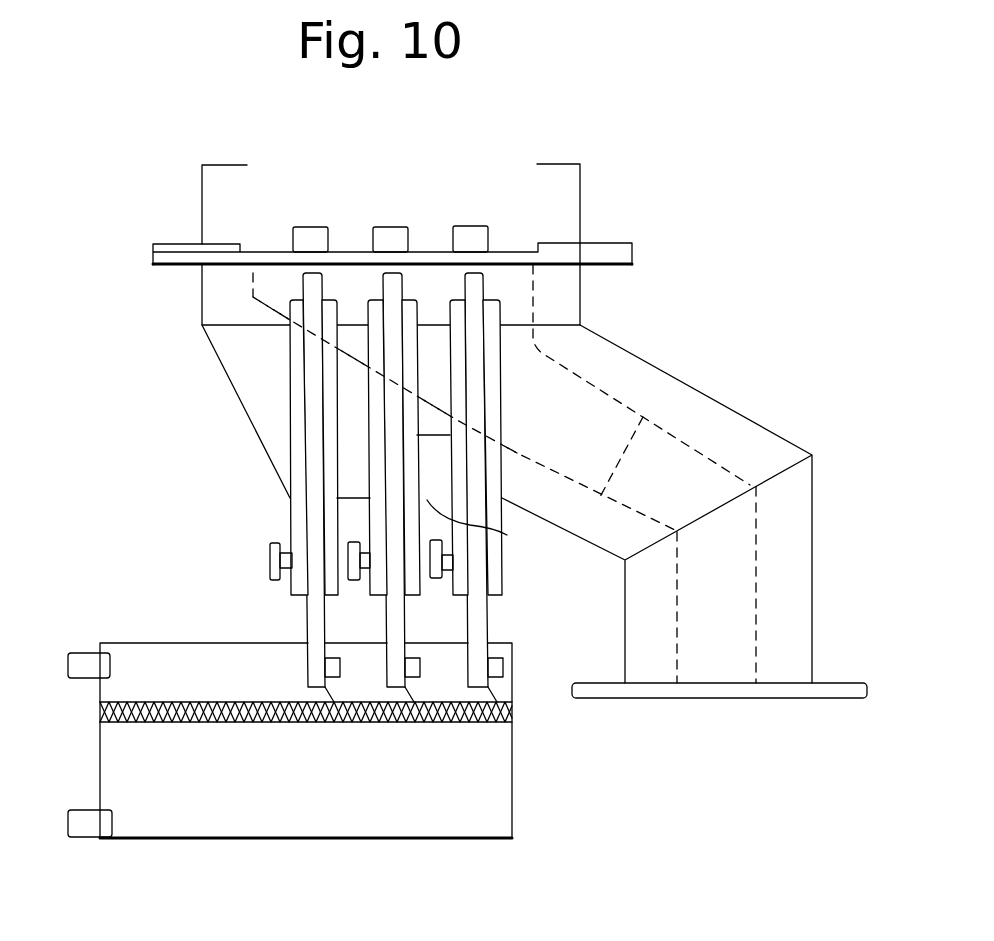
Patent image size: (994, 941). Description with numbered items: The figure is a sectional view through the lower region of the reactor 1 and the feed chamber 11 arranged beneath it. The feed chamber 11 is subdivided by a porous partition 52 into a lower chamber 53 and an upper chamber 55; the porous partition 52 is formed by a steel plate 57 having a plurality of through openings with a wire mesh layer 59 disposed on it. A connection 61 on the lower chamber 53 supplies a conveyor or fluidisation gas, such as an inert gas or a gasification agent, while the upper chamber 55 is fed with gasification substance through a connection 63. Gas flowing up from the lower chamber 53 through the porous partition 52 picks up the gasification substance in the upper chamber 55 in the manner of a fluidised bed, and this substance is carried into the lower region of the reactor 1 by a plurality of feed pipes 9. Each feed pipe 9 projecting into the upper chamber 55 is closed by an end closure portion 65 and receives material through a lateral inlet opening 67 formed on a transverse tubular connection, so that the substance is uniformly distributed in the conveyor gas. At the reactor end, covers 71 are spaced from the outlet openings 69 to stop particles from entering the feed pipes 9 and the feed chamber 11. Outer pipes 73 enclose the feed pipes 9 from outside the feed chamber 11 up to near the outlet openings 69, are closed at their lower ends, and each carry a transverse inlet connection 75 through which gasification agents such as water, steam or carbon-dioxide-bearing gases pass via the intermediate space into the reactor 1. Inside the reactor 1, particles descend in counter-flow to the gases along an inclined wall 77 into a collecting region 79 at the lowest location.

The reactor 1 is at (567, 173).
The feed pipes 9 is at (302, 385).
The feed chamber 11 is at (411, 852).
The porous partition 52 is at (252, 740).
The lower chamber 53 is at (310, 807).
The upper chamber 55 is at (185, 665).
The steel plate 57 is at (116, 722).
The wire mesh layer 59 is at (513, 710).
The connection 61 is at (80, 828).
The connection 63 is at (80, 660).
The end closure portion 65 is at (457, 725).
The lateral inlet opening 67 is at (342, 664).
The outlet openings 69 is at (293, 300).
The covers 71 is at (310, 236).
The outer pipes 73 is at (291, 515).
The inlet connection 75 is at (272, 553).
The inclined wall 77 is at (353, 498).
The collecting region 79 is at (486, 529).